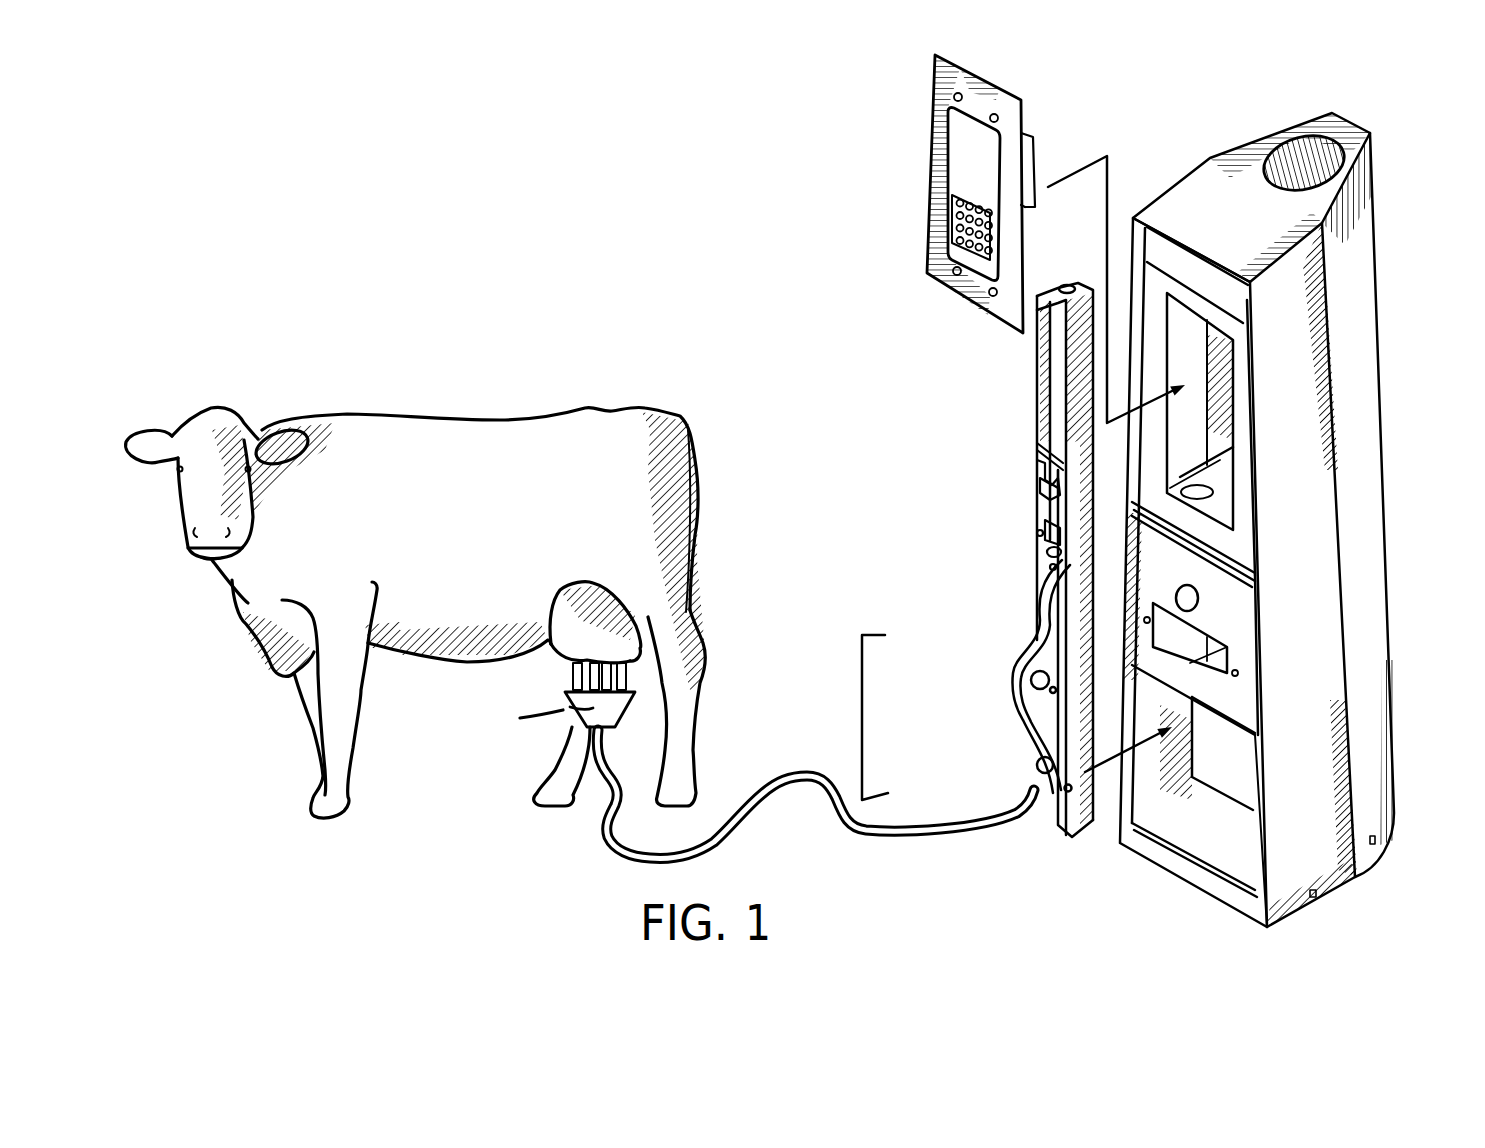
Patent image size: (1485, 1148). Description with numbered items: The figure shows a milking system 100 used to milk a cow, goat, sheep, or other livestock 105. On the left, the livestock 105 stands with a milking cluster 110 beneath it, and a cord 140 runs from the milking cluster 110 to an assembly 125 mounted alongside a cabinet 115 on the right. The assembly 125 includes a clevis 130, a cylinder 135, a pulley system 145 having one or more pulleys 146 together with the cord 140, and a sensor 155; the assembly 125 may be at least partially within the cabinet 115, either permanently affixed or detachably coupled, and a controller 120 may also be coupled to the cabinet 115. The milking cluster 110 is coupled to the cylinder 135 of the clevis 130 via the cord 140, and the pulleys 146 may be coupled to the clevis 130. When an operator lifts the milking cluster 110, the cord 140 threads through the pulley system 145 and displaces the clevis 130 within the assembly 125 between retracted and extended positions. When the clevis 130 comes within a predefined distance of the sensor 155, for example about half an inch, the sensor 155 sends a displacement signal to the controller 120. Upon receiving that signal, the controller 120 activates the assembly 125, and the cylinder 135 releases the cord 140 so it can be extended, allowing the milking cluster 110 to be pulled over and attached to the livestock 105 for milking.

The milking system 100 is at (532, 179).
The livestock 105 is at (634, 422).
The milking cluster 110 is at (593, 705).
The cabinet 115 is at (1333, 877).
The controller 120 is at (935, 206).
The assembly 125 is at (966, 364).
The clevis 130 is at (1045, 548).
The cylinder 135 is at (1055, 420).
The cord 140 is at (1033, 625).
The pulley system 145 is at (856, 723).
The pulleys 146 is at (1012, 680).
The sensor 155 is at (1040, 533).